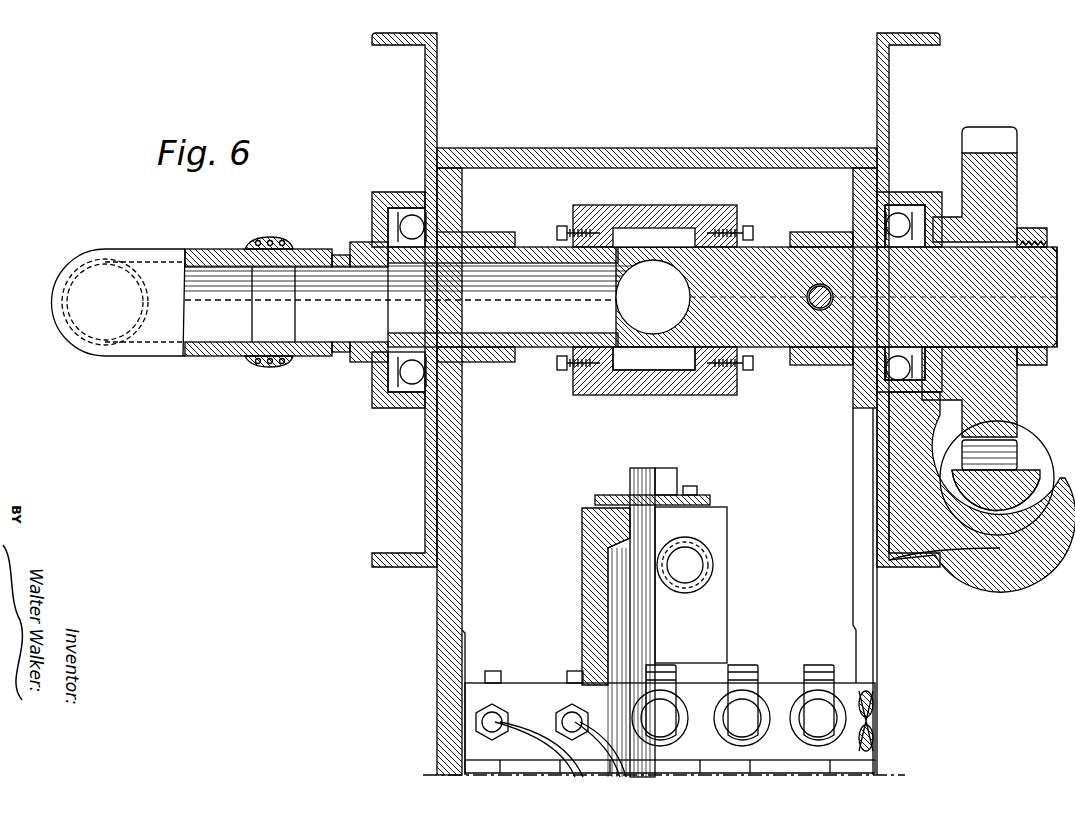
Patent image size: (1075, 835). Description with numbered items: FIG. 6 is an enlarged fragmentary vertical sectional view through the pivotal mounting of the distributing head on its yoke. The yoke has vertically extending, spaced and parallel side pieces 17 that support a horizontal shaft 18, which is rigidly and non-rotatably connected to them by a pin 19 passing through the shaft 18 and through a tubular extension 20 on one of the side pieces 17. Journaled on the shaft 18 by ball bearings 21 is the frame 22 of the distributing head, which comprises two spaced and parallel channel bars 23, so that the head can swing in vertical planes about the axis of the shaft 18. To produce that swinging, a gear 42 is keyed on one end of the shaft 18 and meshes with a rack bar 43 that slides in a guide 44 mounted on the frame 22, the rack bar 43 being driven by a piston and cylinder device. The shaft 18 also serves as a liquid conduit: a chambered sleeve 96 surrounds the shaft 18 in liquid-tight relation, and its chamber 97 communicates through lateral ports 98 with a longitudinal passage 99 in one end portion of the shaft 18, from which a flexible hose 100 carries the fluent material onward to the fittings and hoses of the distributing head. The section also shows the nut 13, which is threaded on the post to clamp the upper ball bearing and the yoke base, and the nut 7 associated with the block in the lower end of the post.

The flexible hose 100 is at (58, 280).
The longitudinal passage 99 is at (354, 243).
The frame 22 is at (418, 134).
The channel bars 23 is at (440, 135).
The side pieces 17 is at (462, 517).
The horizontal shaft 18 is at (770, 255).
The pin 19 is at (780, 352).
The tubular extension 20 is at (824, 311).
The chambered sleeve 96 is at (690, 205).
The chamber 97 is at (652, 362).
The lateral ports 98 is at (592, 395).
The ball bearings 21 is at (898, 214).
The gear 42 is at (1018, 205).
The rack bar 43 is at (1022, 485).
The guide 44 is at (995, 548).
The nut 13 is at (430, 696).
The nut 7 is at (657, 769).